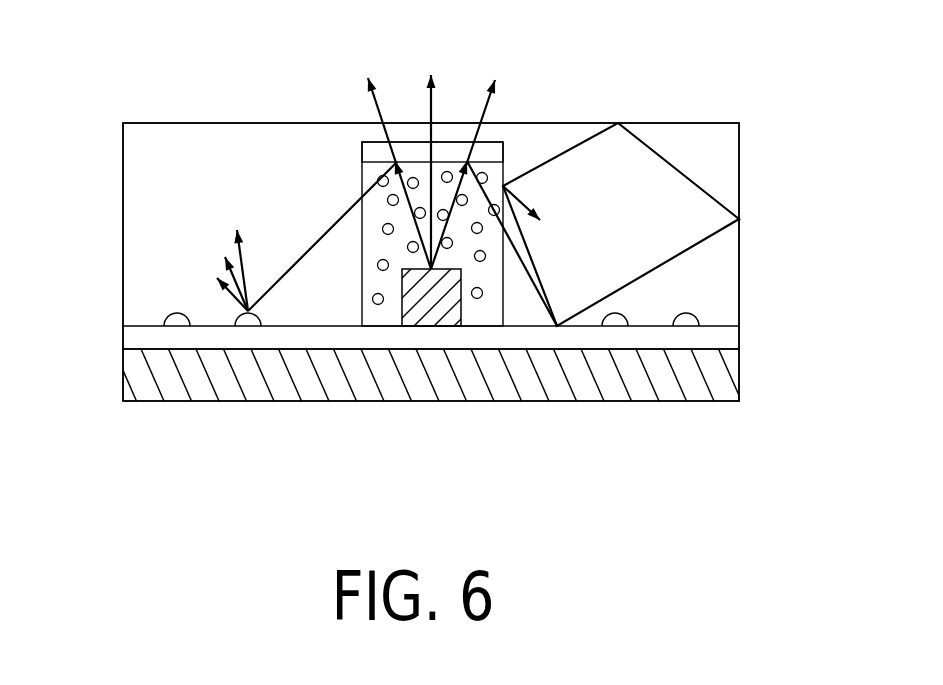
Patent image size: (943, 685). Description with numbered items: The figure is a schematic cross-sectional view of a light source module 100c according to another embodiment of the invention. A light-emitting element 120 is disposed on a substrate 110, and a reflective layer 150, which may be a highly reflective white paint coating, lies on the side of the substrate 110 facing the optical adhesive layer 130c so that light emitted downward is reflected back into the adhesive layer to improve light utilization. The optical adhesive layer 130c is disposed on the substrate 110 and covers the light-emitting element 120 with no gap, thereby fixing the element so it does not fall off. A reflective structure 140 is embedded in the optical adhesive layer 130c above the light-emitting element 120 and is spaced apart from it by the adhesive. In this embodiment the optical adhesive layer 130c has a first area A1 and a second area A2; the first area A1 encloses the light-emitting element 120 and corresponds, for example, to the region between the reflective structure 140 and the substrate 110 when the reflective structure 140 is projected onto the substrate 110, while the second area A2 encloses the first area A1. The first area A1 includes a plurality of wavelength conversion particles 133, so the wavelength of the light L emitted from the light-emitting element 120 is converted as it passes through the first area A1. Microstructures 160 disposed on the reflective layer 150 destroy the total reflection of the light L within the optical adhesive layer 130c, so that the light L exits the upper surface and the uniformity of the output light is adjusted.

The light source module 100c is at (108, 32).
The substrate 110 is at (717, 375).
The light-emitting element 120 is at (430, 310).
The optical adhesive layer 130c is at (717, 145).
The wavelength conversion particles 133 is at (475, 300).
The reflective structure 140 is at (492, 150).
The reflective layer 150 is at (717, 333).
The microstructures 160 is at (175, 322).
The light L is at (490, 105).
The first area A1 is at (364, 177).
The second area A2 is at (188, 152).